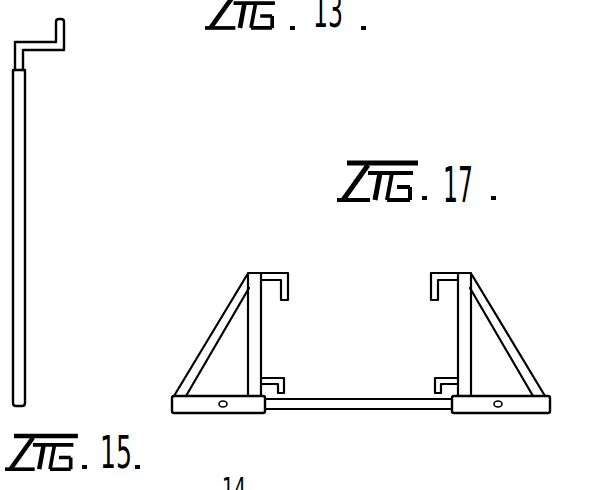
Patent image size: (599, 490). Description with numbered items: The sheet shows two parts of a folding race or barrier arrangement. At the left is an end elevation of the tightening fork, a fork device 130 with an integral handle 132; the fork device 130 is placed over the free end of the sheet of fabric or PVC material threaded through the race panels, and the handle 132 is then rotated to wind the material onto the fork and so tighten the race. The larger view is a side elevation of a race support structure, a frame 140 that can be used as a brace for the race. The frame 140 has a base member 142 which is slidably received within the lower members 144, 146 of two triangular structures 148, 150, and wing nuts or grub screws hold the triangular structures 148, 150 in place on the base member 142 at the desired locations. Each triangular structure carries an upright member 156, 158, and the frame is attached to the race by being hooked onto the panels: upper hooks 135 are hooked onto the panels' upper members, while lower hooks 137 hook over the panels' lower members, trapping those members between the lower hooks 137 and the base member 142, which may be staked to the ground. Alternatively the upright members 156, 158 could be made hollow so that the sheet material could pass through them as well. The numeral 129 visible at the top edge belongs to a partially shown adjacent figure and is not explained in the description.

In FIG. 13, the hook member 129 is at (442, 0).
In FIG. 15, the fork device 130 is at (26, 147).
In FIG. 15, the integral handle 132 is at (62, 50).
In FIG. 17, the upper hooks 135 is at (432, 271).
In FIG. 17, the lower hooks 137 is at (432, 378).
In FIG. 17, the frame 140 is at (293, 262).
In FIG. 17, the base member 142 is at (370, 410).
In FIG. 17, the lower member 144 is at (247, 414).
In FIG. 17, the lower member 146 is at (475, 414).
In FIG. 17, the triangular structure 148 is at (252, 310).
In FIG. 17, the triangular structure 150 is at (470, 318).
In FIG. 17, the upright member 156 is at (259, 345).
In FIG. 17, the upright member 158 is at (457, 322).